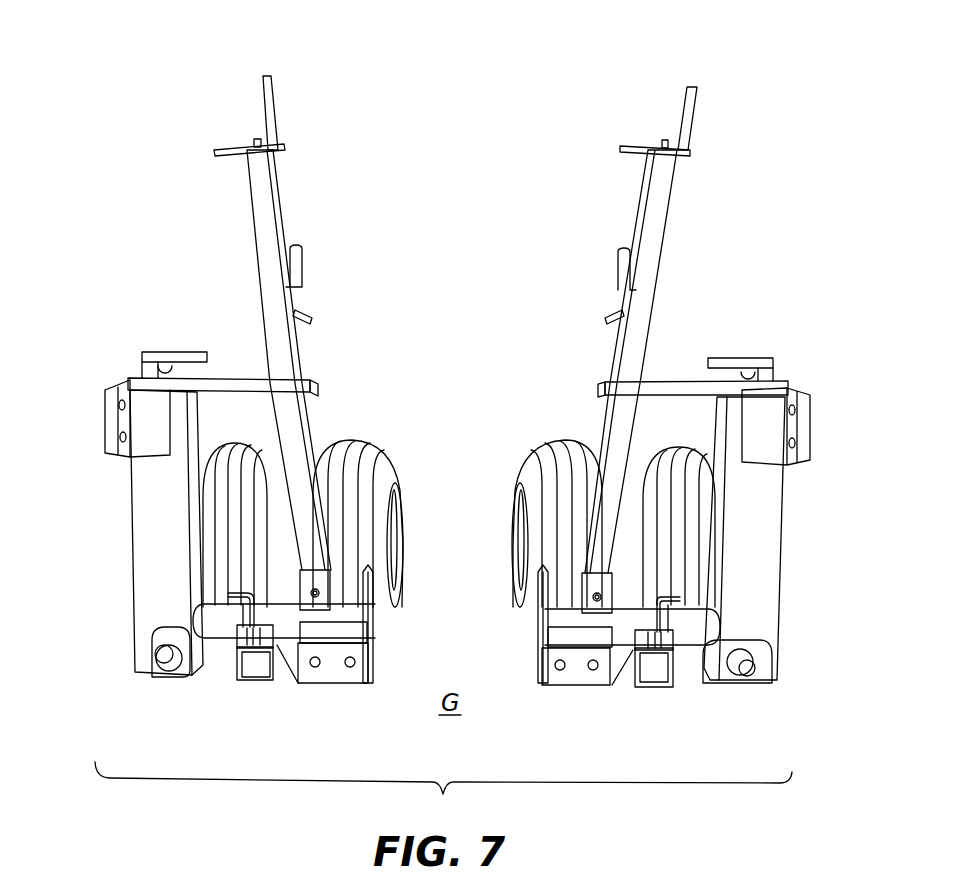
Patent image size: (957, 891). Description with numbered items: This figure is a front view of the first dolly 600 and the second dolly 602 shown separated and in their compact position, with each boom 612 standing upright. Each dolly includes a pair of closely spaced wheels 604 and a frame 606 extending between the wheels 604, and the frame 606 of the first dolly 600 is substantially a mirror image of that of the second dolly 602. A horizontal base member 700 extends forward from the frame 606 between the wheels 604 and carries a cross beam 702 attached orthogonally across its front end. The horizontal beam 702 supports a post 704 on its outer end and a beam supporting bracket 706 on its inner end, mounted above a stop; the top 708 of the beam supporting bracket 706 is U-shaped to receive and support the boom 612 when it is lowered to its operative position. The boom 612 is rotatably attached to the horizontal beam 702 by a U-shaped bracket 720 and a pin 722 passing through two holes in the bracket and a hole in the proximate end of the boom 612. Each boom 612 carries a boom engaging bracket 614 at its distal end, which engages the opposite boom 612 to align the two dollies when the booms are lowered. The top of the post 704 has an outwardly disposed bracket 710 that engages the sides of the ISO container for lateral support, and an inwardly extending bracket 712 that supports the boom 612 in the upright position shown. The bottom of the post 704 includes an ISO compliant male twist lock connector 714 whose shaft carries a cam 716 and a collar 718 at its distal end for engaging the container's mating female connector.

The first dolly 600 is at (835, 74).
The second dolly 602 is at (77, 66).
The wheels 604 is at (210, 487).
The frame 606 is at (66, 557).
The boom 612 is at (265, 223).
The boom engaging bracket 614 is at (282, 148).
The horizontal base member 700 is at (250, 680).
The cross beam 702 is at (293, 650).
The post 704 is at (145, 548).
The beam supporting bracket 706 is at (545, 641).
The top of the beam supporting bracket 708 is at (597, 597).
The outwardly disposed bracket 710 is at (108, 402).
The inwardly extending bracket 712 is at (243, 378).
The male twist lock connector 714 is at (108, 653).
The cam 716 is at (160, 665).
The collar 718 is at (158, 648).
The U-shaped bracket 720 is at (318, 577).
The pin 722 is at (543, 612).